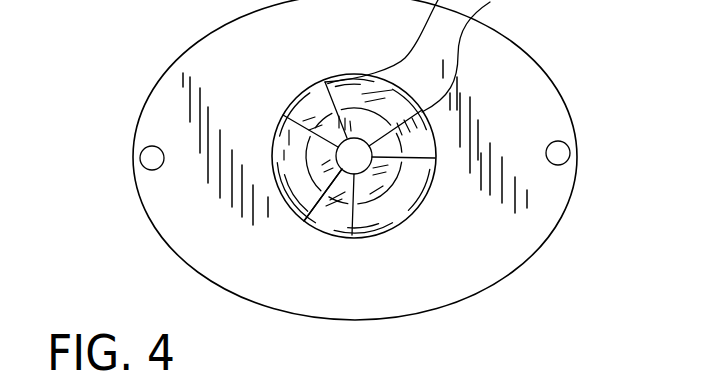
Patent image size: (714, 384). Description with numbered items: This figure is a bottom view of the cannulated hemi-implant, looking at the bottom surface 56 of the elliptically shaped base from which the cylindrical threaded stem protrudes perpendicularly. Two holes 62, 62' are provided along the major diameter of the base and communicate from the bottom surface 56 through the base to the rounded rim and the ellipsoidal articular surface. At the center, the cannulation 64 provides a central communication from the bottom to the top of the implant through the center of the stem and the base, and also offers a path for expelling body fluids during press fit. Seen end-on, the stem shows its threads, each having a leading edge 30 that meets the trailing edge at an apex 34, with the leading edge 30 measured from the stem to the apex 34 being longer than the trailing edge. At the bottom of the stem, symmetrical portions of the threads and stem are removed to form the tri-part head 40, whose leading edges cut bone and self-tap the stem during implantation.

The leading edge 30 is at (415, 190).
The apex 34 is at (433, 178).
The tri-part head 40 is at (320, 224).
The bottom surface 56 is at (165, 105).
The hole 62 is at (96, 154).
The hole 62' is at (618, 144).
The cannulation 64 is at (360, 160).